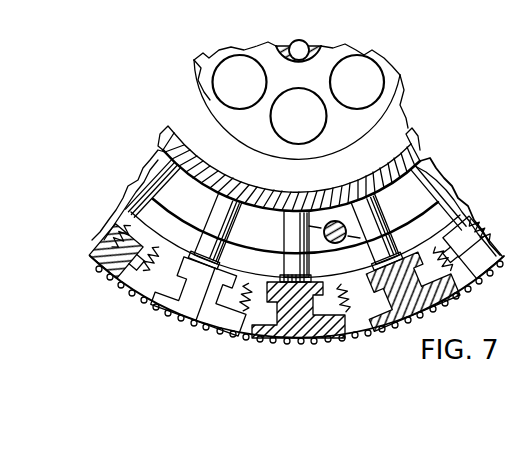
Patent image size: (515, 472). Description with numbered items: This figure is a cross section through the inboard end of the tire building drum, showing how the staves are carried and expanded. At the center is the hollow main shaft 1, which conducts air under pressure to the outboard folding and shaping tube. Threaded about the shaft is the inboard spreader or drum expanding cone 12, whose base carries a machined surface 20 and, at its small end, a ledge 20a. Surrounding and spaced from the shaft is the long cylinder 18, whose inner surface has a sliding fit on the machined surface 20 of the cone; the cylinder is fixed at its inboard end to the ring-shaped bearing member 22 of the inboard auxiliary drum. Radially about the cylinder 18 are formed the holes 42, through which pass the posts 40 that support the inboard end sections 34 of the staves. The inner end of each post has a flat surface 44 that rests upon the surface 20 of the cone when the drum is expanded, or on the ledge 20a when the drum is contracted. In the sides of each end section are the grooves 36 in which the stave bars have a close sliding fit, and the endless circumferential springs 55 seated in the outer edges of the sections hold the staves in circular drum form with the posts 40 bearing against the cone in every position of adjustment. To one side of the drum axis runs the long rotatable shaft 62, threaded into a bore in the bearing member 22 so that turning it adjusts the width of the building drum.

The main shaft 1 is at (322, 51).
The inboard spreader or drum expanding cone 12 is at (388, 86).
The ledge 20a is at (195, 90).
The machined surface 20 is at (407, 136).
The flat surface 44 is at (240, 160).
The long cylinder 18 is at (268, 192).
The holes 42 is at (378, 164).
The posts 40 is at (291, 227).
The long rotatable shaft 62 is at (375, 200).
The ring-shaped bearing member 22 is at (462, 207).
The grooves 36 is at (276, 303).
The endless circumferential springs 55 is at (370, 337).
The inboard end section 34 is at (307, 328).